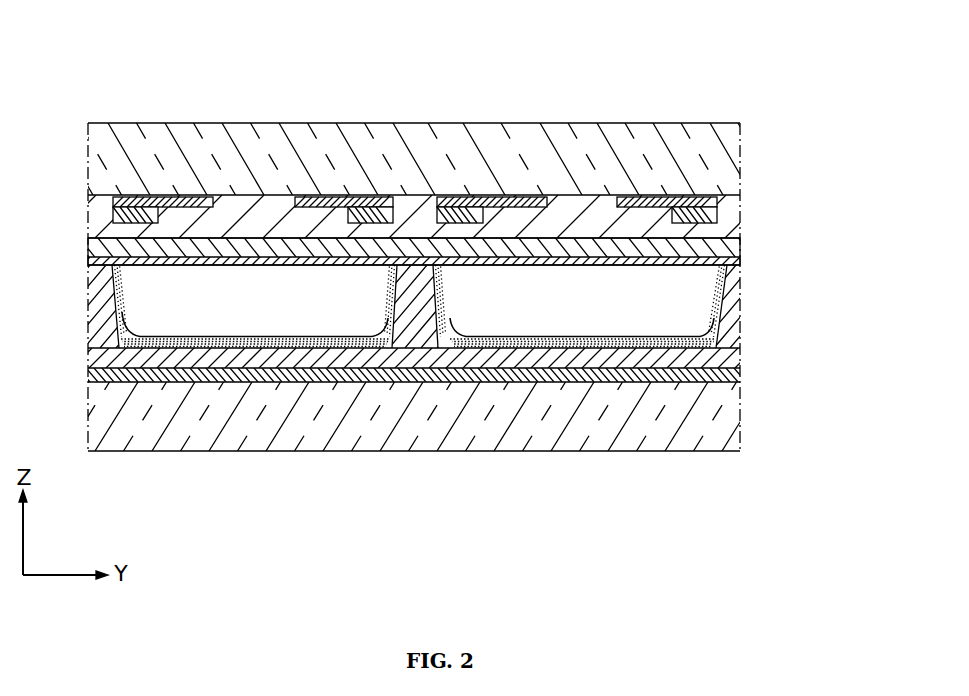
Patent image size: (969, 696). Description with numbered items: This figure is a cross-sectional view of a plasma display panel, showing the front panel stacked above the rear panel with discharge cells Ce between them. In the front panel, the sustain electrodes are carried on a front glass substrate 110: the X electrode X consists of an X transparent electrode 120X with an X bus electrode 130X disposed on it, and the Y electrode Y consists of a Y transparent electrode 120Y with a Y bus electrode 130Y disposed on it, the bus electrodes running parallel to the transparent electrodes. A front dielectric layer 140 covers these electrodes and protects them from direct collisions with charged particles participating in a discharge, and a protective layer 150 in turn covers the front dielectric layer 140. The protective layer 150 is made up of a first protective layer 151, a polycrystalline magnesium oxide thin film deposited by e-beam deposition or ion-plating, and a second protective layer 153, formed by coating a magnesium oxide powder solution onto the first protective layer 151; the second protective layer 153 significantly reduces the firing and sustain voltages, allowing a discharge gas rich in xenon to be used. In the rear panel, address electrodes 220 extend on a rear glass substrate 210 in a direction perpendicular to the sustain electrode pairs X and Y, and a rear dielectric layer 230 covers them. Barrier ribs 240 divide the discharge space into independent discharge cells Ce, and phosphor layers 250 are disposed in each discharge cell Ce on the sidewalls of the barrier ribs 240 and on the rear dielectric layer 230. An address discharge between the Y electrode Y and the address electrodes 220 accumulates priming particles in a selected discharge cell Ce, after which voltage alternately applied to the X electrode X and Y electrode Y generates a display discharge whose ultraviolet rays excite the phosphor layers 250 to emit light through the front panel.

The front glass substrate 110 is at (722, 152).
The front dielectric layer 140 is at (725, 224).
The X bus electrode 130X is at (462, 192).
The X transparent electrode 120X is at (505, 192).
The Y bus electrode 130Y is at (693, 192).
The Y transparent electrode 120Y is at (638, 192).
The X electrode X is at (548, 63).
The Y electrode Y is at (607, 63).
The protective layer 150 is at (836, 232).
The first protective layer 151 is at (738, 244).
The second protective layer 153 is at (737, 255).
The barrier ribs 240 is at (413, 338).
The phosphor layers 250 is at (568, 347).
The discharge cell Ce is at (617, 298).
The rear dielectric layer 230 is at (735, 355).
The address electrodes 220 is at (735, 373).
The rear glass substrate 210 is at (735, 427).